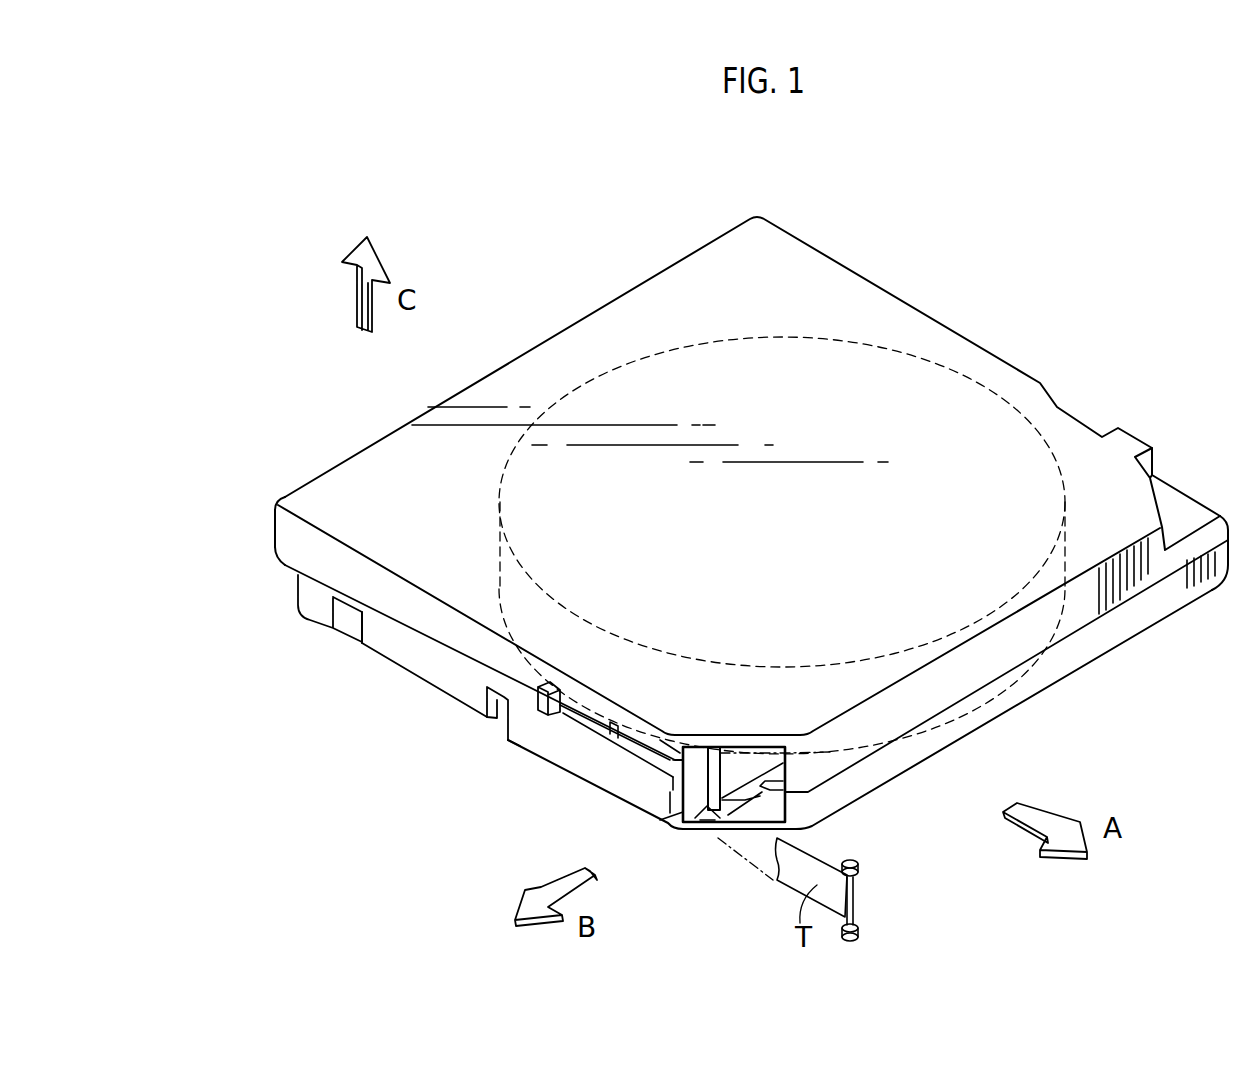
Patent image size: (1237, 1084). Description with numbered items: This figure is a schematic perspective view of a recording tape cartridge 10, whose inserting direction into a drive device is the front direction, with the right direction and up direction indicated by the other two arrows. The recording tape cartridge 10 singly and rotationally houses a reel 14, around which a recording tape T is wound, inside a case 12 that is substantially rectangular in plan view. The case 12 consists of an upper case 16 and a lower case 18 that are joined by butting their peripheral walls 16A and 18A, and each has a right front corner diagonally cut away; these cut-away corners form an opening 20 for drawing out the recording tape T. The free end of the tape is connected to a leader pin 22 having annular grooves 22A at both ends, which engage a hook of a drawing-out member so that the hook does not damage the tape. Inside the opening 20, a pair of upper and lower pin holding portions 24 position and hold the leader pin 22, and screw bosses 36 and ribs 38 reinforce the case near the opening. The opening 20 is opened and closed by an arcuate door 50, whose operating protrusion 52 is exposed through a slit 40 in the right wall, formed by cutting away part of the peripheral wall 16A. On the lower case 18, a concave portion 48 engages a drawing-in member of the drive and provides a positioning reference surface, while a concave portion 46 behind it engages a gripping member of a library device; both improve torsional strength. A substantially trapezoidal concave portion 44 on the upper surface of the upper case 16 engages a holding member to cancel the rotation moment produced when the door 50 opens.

The recording tape cartridge 10 is at (1070, 300).
The case 12 is at (812, 245).
The reel 14 is at (810, 437).
The upper case 16 is at (1020, 641).
The peripheral wall of the upper case 16A is at (285, 540).
The lower case 18 is at (997, 703).
The peripheral wall of the lower case 18A is at (417, 657).
The opening 20 is at (725, 766).
The leader pin 22 is at (853, 846).
The annular grooves 22A is at (860, 937).
The pin holding portions 24 is at (770, 790).
The screw bosses 36 is at (665, 815).
The ribs 38 is at (707, 813).
The slit 40 is at (585, 729).
The concave portion 44 is at (1083, 423).
The concave portion 46 is at (350, 612).
The concave portion 48 is at (497, 710).
The door 50 is at (560, 695).
The operating protrusion 52 is at (510, 737).